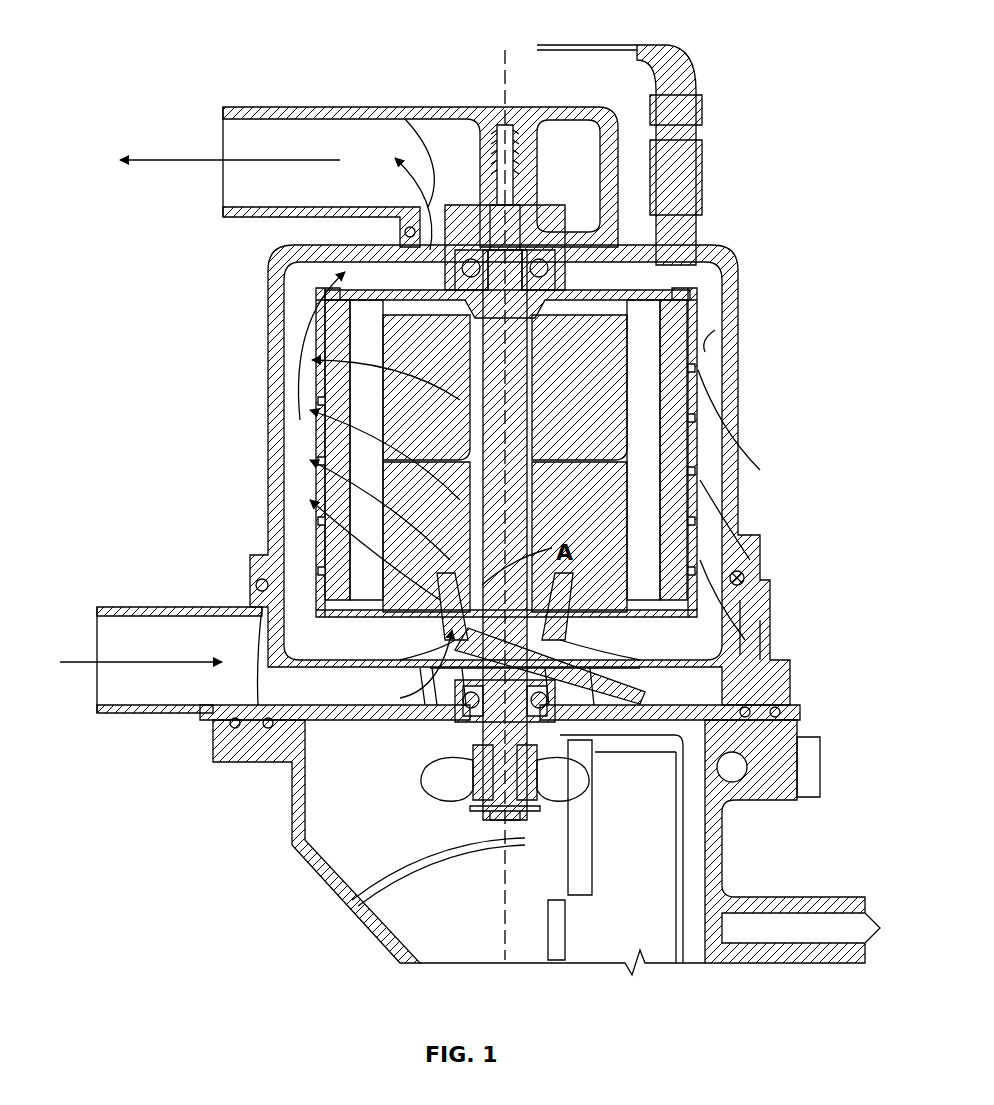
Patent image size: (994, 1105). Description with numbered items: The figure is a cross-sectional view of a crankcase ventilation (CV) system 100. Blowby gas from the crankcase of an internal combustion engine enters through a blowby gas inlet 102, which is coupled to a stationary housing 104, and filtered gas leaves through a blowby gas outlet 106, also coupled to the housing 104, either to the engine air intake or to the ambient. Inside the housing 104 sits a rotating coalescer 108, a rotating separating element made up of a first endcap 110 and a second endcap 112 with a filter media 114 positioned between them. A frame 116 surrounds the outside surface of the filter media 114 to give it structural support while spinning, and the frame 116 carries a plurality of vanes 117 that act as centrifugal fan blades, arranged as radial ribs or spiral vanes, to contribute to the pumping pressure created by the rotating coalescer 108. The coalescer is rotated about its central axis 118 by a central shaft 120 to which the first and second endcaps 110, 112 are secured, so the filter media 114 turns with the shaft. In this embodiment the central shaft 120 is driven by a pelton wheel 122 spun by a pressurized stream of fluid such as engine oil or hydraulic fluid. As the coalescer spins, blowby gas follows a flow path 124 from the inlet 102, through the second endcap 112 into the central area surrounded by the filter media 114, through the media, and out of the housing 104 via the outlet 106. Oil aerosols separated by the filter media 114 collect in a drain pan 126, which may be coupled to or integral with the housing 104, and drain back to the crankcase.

The CV system 100 is at (230, 40).
The blowby gas inlet 102 is at (136, 700).
The housing 104 is at (264, 300).
The blowby gas outlet 106 is at (245, 190).
The rotating coalescer 108 is at (708, 352).
The first endcap 110 is at (740, 270).
The second endcap 112 is at (744, 578).
The filter media 114 is at (696, 405).
The frame 116 is at (696, 418).
The vanes 117 is at (698, 521).
The central axis 118 is at (500, 78).
The central shaft 120 is at (497, 802).
The pelton wheel 122 is at (585, 785).
The flow path 124 is at (138, 160).
The drain pan 126 is at (745, 655).